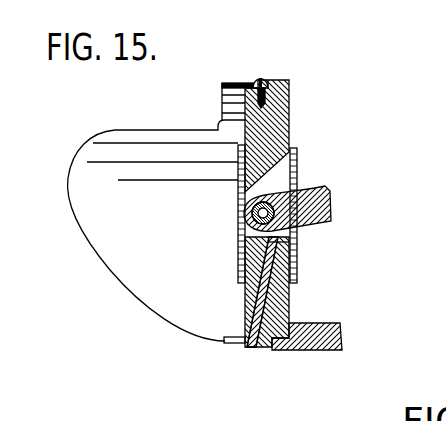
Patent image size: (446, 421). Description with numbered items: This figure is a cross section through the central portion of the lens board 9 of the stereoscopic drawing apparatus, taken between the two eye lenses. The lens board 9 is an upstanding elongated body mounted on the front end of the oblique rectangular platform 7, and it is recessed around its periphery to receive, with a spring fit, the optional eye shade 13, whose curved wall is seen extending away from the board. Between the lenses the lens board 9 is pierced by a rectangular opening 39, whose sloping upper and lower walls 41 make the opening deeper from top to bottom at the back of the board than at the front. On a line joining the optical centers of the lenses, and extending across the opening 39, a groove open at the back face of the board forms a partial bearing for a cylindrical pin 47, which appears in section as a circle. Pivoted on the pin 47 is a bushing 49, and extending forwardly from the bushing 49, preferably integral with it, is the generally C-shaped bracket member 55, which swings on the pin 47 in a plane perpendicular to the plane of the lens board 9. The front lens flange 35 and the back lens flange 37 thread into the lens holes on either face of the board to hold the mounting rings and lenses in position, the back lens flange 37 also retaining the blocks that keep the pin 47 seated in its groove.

The platform 7 is at (325, 352).
The lens board 9 is at (289, 107).
The eye shade 13 is at (153, 302).
The front lens flange 35 is at (240, 250).
The back lens flange 37 is at (292, 274).
The rectangular opening 39 is at (289, 242).
The sloping upper and lower walls 41 is at (273, 183).
The cylindrical pin 47 is at (252, 217).
The bushing 49 is at (258, 209).
The bracket member 55 is at (323, 198).